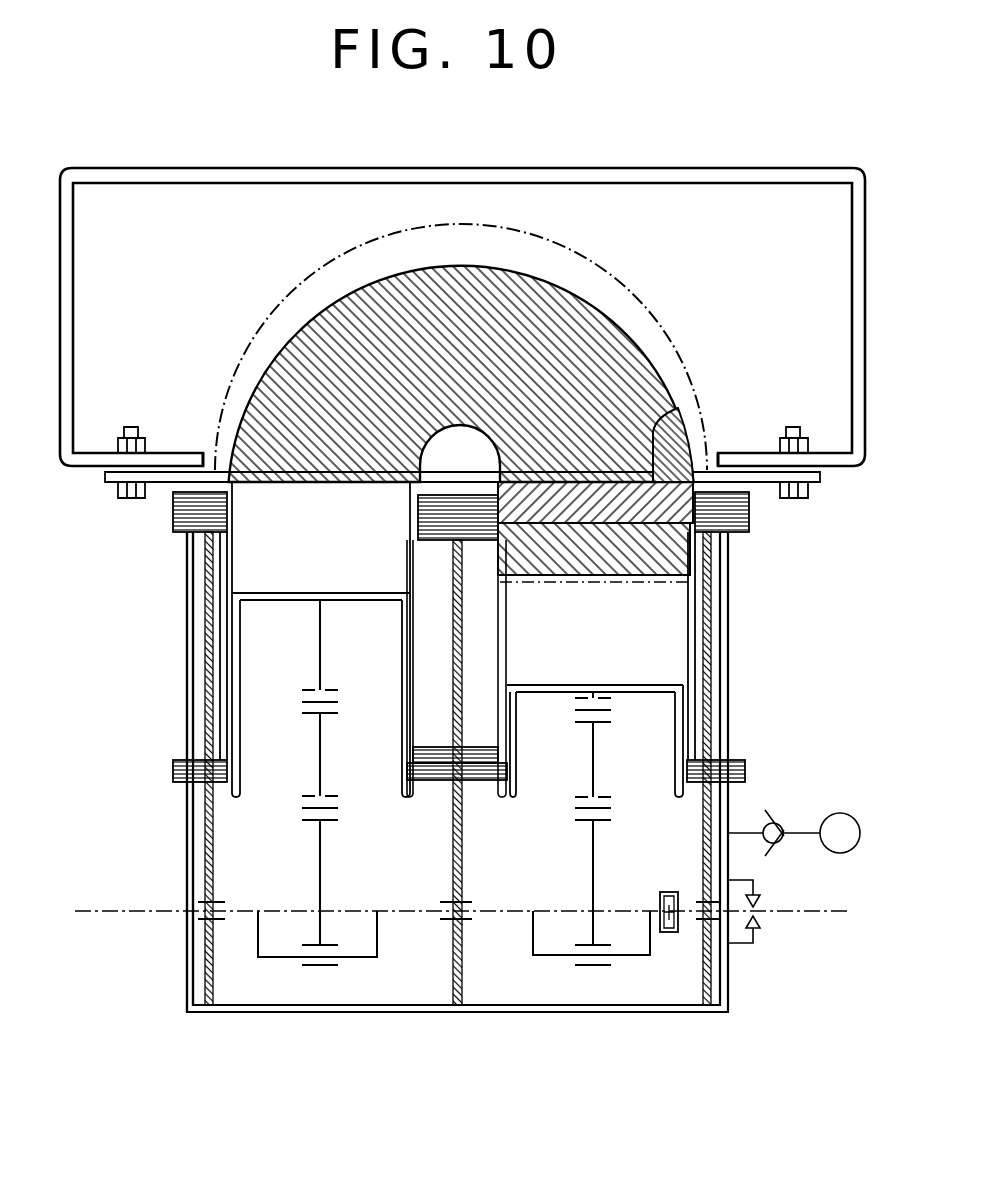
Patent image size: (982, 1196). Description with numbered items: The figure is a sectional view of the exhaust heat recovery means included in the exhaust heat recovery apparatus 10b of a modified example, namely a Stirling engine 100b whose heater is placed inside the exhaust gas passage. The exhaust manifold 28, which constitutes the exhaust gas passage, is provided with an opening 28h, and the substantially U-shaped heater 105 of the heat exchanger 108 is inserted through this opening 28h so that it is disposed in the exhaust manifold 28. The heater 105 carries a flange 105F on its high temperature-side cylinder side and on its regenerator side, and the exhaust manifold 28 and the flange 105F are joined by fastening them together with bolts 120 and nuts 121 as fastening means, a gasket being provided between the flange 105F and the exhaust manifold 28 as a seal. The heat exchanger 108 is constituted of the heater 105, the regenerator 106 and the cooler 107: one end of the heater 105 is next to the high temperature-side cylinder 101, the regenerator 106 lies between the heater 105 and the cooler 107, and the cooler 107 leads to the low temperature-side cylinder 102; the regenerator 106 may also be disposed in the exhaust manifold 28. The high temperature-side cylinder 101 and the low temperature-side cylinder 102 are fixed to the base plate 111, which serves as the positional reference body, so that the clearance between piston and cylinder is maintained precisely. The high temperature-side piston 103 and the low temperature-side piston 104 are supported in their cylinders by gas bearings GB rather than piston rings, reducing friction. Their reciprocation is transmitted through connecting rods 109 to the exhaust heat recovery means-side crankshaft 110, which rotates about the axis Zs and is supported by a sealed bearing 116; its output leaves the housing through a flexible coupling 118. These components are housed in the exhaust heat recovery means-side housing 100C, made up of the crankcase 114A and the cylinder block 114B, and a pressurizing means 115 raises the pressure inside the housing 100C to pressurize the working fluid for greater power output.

The exhaust heat recovery apparatus 10b is at (136, 142).
The exhaust manifold 28 is at (700, 167).
The opening 28h is at (208, 448).
The heater 105 is at (503, 246).
The heat exchanger 108 is at (625, 290).
The regenerator 106 is at (666, 420).
The nut 121 is at (134, 428).
The flange 105F is at (108, 477).
The bolt 120 is at (112, 496).
The base plate 111 is at (750, 520).
The cooler 107 is at (692, 562).
The high temperature-side cylinder 101 is at (228, 557).
The high temperature-side piston 103 is at (238, 624).
The low temperature-side cylinder 102 is at (692, 624).
The low temperature-side piston 104 is at (683, 742).
The gas bearing GB is at (228, 697).
The exhaust heat recovery means-side cylinder block 114B is at (190, 737).
The exhaust heat recovery means-side crankcase 114A is at (190, 798).
The exhaust heat recovery means-side housing 100C is at (104, 772).
The pressurizing means 115 is at (841, 812).
The connecting rod 109 is at (322, 861).
The exhaust heat recovery means-side crankshaft 110 is at (756, 904).
The sealed bearing 116 is at (760, 924).
The flexible coupling 118 is at (668, 934).
The rotation axis Zs is at (474, 914).
The Stirling engine 100b is at (148, 996).